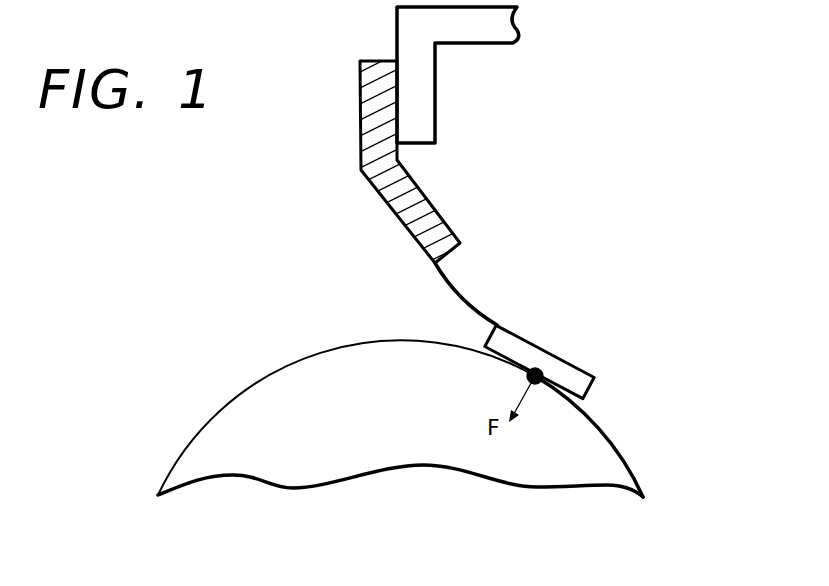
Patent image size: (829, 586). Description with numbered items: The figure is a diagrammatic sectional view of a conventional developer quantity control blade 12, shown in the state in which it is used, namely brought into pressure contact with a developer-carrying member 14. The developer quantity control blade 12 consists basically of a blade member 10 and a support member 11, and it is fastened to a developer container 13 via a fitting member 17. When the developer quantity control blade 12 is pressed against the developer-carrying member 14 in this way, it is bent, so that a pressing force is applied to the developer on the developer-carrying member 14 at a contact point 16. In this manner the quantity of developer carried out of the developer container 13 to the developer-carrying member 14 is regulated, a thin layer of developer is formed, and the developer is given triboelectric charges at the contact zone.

The developer container 13 is at (405, 22).
The fitting member 17 is at (387, 183).
The support member 11 is at (480, 305).
The blade member 10 is at (540, 363).
The developer quantity control blade 12 is at (627, 215).
The contact point 16 is at (535, 376).
The developer-carrying member 14 is at (325, 467).